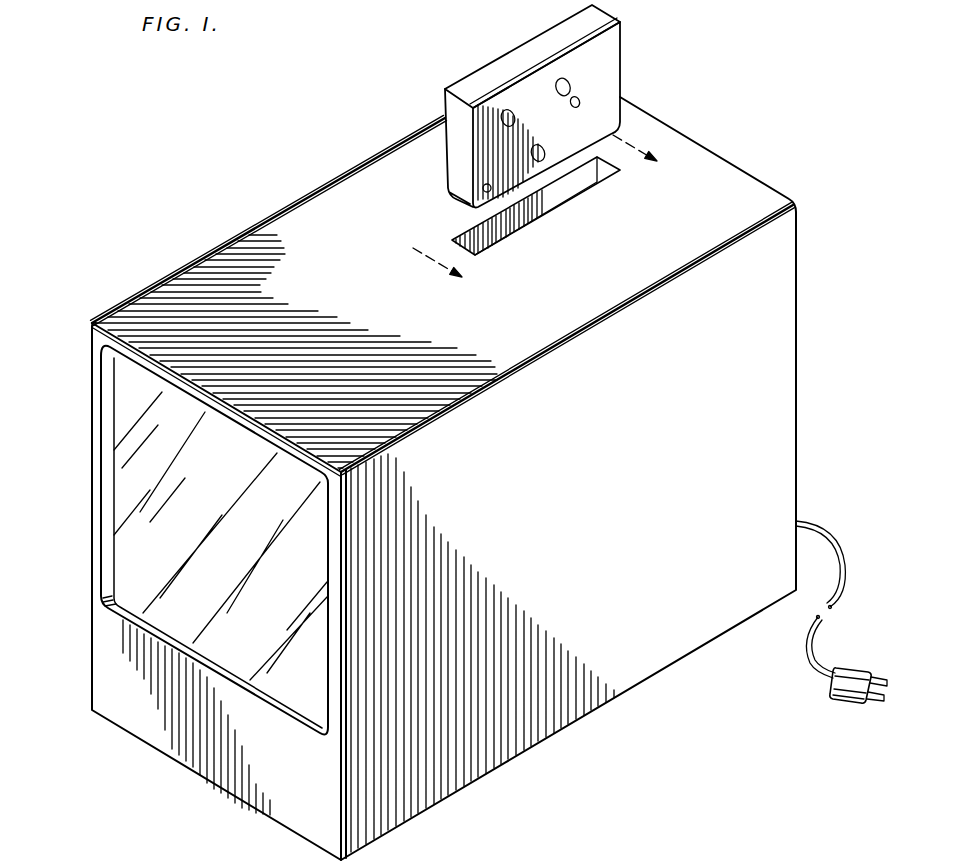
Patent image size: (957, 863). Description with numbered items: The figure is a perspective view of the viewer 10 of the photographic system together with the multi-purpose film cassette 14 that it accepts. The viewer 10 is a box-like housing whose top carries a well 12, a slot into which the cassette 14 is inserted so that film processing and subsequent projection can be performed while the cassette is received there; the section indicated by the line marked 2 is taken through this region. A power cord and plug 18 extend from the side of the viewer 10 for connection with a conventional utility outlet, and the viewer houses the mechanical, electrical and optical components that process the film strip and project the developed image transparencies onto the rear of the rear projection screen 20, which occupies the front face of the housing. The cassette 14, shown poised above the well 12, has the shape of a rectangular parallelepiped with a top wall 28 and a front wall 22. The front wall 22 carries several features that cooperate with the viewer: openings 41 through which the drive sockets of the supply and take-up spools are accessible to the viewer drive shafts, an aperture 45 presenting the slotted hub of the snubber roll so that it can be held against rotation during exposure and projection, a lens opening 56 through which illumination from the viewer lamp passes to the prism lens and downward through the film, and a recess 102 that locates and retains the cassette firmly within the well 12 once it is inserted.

The viewer 10 is at (577, 538).
The well 12 is at (565, 197).
The multi-purpose film cassette 14 is at (541, 117).
The power cord and plug 18 is at (832, 681).
The rear projection screen 20 is at (123, 500).
The front wall 22 is at (478, 157).
The top wall 28 is at (540, 55).
The openings 41 is at (553, 114).
The aperture 45 is at (484, 192).
The lens opening 56 is at (545, 148).
The recess 102 is at (580, 100).
The section line 2- 2 is at (535, 213).